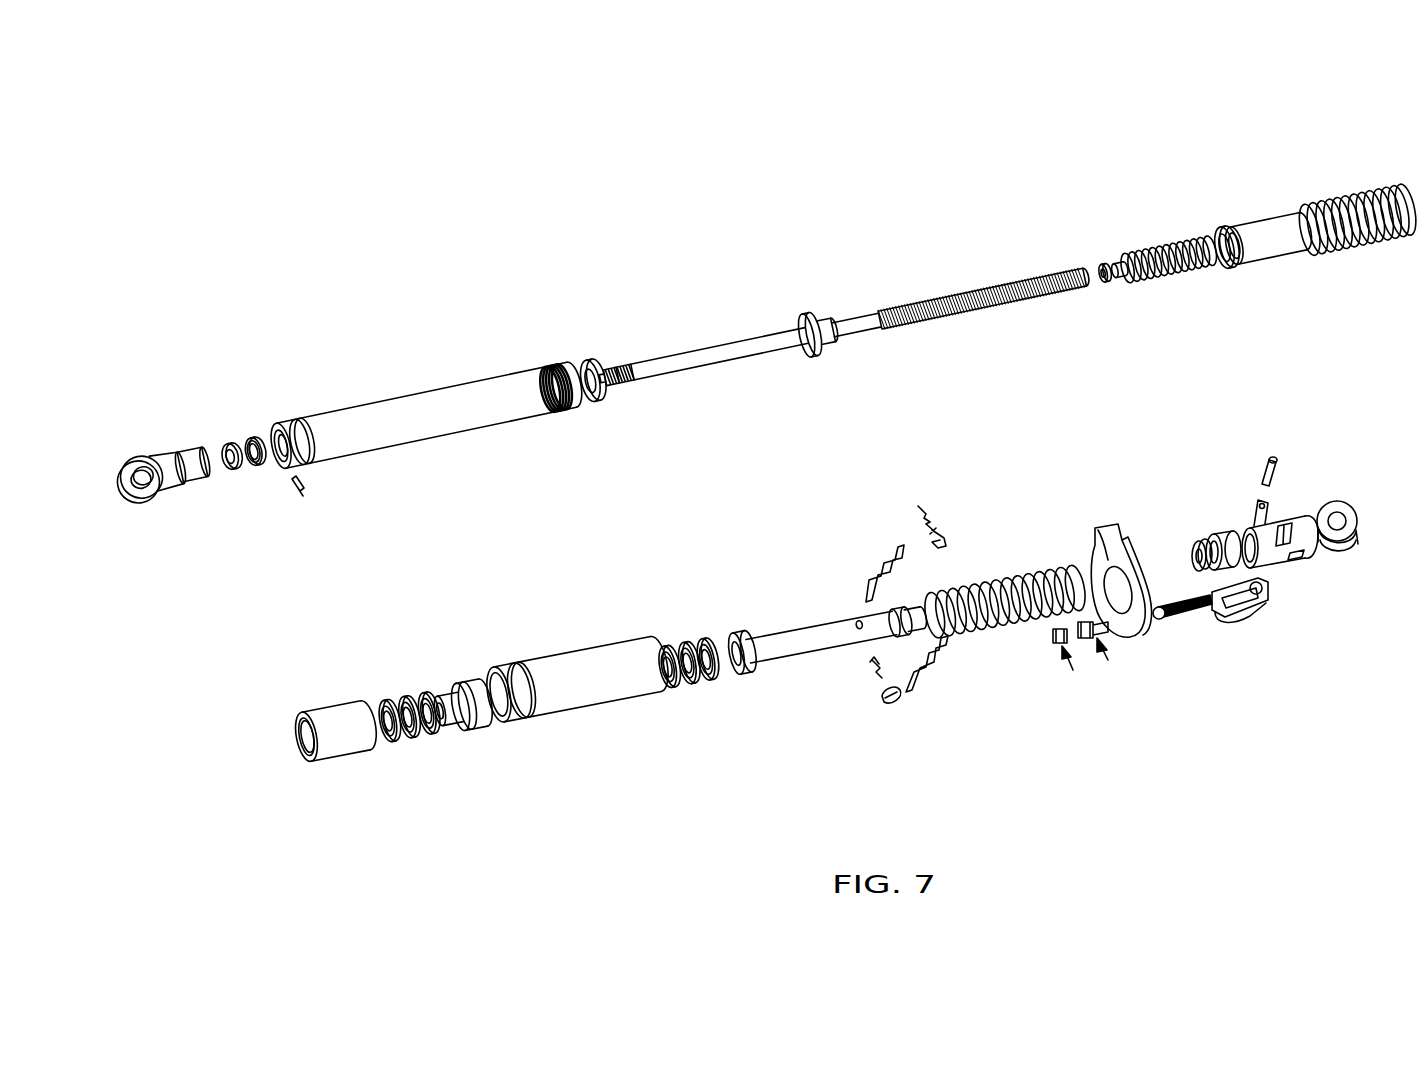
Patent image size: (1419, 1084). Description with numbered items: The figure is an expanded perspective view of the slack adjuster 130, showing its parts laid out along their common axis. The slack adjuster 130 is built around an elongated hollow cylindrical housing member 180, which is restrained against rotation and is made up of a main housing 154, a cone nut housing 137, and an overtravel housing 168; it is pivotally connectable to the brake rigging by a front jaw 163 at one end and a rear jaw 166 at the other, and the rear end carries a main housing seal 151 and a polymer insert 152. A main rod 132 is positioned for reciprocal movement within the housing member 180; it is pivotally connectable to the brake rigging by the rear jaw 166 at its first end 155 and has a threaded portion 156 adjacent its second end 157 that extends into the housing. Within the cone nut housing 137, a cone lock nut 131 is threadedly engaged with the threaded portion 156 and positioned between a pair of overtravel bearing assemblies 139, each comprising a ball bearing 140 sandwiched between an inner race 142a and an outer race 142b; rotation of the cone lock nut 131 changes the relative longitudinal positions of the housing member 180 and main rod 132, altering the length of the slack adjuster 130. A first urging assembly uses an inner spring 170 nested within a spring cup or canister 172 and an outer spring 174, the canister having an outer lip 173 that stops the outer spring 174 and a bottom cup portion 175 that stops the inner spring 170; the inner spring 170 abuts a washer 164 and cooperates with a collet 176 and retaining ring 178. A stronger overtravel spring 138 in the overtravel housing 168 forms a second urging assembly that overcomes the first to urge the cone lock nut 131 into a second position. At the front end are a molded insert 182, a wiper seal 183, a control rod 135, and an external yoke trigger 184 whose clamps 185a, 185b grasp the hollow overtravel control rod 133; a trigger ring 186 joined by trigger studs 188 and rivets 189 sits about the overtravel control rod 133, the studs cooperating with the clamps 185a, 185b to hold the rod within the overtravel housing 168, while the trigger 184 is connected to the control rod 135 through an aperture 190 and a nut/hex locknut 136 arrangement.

The slack adjuster 130 is at (198, 294).
The cone lock nut 131 is at (475, 724).
The main rod 132 is at (1077, 232).
The overtravel control rod 133 is at (776, 631).
The control rod 135 is at (1270, 601).
The nut/hex locknut 136 is at (1113, 672).
The cone nut housing 137 is at (331, 704).
The overtravel spring 138 is at (1000, 626).
The overtravel bearing assemblies 139 is at (437, 688).
The ball bearing 140 is at (408, 740).
The inner race 142a is at (430, 730).
The outer race 142b is at (394, 740).
The main housing seal 151 is at (228, 443).
The polymer insert 152 is at (256, 467).
The main housing 154 is at (566, 352).
The first end 155 is at (636, 374).
The threaded portion 156 is at (963, 300).
The second end 157 is at (1066, 272).
The front jaw 163 is at (1356, 551).
The washer 164 is at (806, 356).
The rear jaw 166 is at (163, 446).
The overtravel housing 168 is at (573, 717).
The inner spring 170 is at (1166, 246).
The spring cup or canister 172 is at (1262, 221).
The outer lip 173 is at (1222, 233).
The outer spring 174 is at (1358, 194).
The bottom cup portion 175 is at (1305, 211).
The collet 176 is at (1103, 263).
The retaining ring 178 is at (1119, 263).
The housing member 180 is at (435, 447).
The molded insert 182 is at (1220, 538).
The wiper seal 183 is at (1200, 543).
The external yoke trigger 184 is at (1150, 627).
The clamp 185a is at (1099, 561).
The clamp 185b is at (1120, 546).
The trigger ring 186 is at (881, 562).
The trigger studs 188 is at (946, 540).
The rivets 189 is at (920, 510).
The aperture 190 is at (1128, 630).